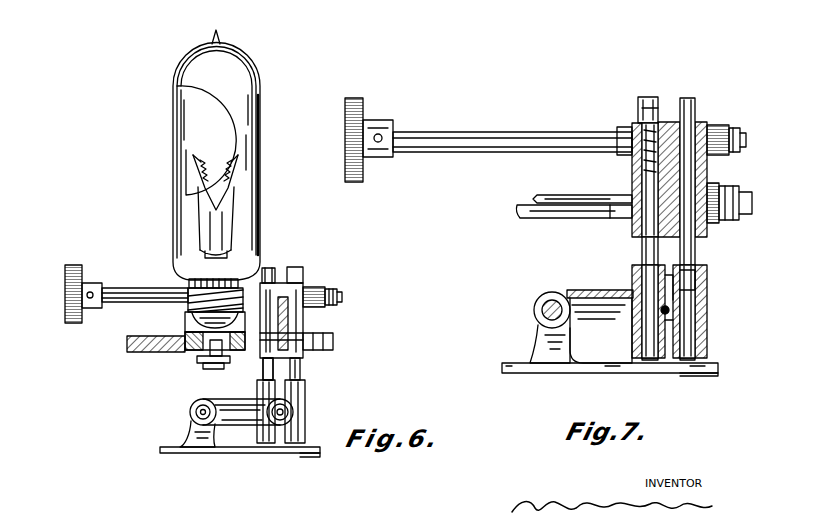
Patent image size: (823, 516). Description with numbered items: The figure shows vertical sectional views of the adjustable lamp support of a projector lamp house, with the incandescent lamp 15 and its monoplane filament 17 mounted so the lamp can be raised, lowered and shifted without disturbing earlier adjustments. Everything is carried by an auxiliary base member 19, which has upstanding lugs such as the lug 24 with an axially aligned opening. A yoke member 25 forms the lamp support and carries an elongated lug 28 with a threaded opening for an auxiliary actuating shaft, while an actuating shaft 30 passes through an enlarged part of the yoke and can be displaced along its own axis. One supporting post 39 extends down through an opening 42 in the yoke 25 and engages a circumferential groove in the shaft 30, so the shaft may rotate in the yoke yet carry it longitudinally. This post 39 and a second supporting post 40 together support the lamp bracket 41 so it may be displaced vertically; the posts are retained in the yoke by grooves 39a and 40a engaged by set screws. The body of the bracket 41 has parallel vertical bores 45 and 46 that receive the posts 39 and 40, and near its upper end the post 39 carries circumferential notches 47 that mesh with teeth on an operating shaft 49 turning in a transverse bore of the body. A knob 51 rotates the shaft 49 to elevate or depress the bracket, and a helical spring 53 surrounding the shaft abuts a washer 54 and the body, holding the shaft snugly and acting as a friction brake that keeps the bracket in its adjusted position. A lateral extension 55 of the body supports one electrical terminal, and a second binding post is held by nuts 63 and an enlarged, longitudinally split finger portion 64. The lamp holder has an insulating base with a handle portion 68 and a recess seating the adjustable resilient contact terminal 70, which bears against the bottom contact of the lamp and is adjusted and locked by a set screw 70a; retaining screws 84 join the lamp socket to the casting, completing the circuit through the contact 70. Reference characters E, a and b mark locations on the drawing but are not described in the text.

In FIG. 6, the lamp 15 is at (258, 78).
In FIG. 6, the filament 17 is at (230, 172).
In FIG. 6, the auxiliary base member 19 is at (306, 456).
In FIG. 7, the auxiliary base member 19 is at (715, 376).
In FIG. 6, the upstanding lug 24 is at (190, 434).
In FIG. 7, the upstanding lug 24 is at (540, 350).
In FIG. 6, the yoke member 25 is at (237, 410).
In FIG. 7, the yoke member 25 is at (596, 300).
In FIG. 6, the elongated lug 28 is at (190, 411).
In FIG. 7, the elongated lug 28 is at (540, 300).
In FIG. 6, the actuating shaft 30 is at (303, 402).
In FIG. 7, the actuating shaft 30 is at (708, 307).
In FIG. 6, the supporting post 39 is at (266, 268).
In FIG. 7, the supporting post 39 is at (648, 260).
In FIG. 6, the groove 39a is at (275, 370).
In FIG. 7, the groove 39a is at (625, 300).
In FIG. 6, the supporting post 40 is at (300, 270).
In FIG. 7, the supporting post 40 is at (695, 260).
In FIG. 7, the groove 40a is at (698, 280).
In FIG. 6, the lamp bracket 41 is at (287, 282).
In FIG. 7, the lamp bracket 41 is at (670, 122).
In FIG. 7, the opening 42 is at (650, 340).
In FIG. 7, the vertical bore 45 is at (650, 187).
In FIG. 7, the vertical bore 46 is at (700, 185).
In FIG. 7, the circumferential notches 47 is at (634, 122).
In FIG. 6, the operating shaft 49 is at (131, 288).
In FIG. 7, the operating shaft 49 is at (500, 132).
In FIG. 6, the knob 51 is at (65, 280).
In FIG. 7, the knob 51 is at (360, 98).
In FIG. 6, the helical spring 53 is at (313, 287).
In FIG. 7, the helical spring 53 is at (715, 125).
In FIG. 6, the washer 54 is at (336, 292).
In FIG. 7, the washer 54 is at (738, 128).
In FIG. 6, the lateral extension 55 is at (288, 320).
In FIG. 6, the nuts 63 is at (318, 341).
In FIG. 7, the nuts 63 is at (745, 218).
In FIG. 7, the enlarged finger portion 64 is at (535, 218).
In FIG. 6, the handle portion 68 is at (127, 345).
In FIG. 6, the resilient contact terminal 70 is at (205, 328).
In FIG. 6, the set screw 70a is at (197, 366).
In FIG. 6, the retaining screws 84 is at (185, 345).
In FIG. 6, the shaft axis E is at (112, 288).
In FIG. 7, the shaft axis E is at (430, 135).
In FIG. 6, the pivot point a is at (203, 425).
In FIG. 7, the pivot point a is at (552, 300).
In FIG. 6, the pivot point b is at (280, 425).